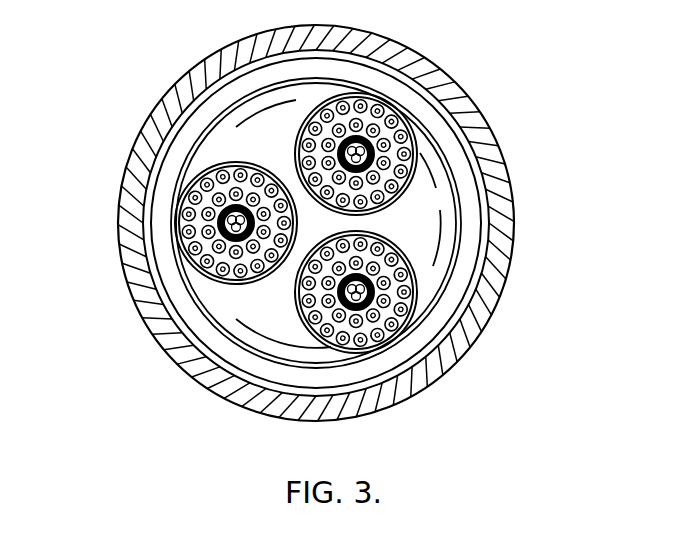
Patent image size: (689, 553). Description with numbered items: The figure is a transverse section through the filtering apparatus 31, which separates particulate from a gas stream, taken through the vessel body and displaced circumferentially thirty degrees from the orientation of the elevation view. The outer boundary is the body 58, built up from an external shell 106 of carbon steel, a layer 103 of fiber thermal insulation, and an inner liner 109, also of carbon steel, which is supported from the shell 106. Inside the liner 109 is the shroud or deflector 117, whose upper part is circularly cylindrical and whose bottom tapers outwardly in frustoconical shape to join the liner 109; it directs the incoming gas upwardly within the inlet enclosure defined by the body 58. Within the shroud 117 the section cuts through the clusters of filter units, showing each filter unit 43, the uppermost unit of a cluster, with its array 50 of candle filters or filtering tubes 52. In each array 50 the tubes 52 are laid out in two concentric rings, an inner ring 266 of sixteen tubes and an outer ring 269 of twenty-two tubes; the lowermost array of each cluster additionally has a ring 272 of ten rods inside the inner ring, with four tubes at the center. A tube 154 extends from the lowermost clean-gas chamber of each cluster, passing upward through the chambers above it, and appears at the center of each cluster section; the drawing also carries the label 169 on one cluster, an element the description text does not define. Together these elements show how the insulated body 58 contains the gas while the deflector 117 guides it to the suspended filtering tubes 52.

The filtering apparatus 31 is at (571, 264).
The filter unit 43 is at (257, 164).
The array 50 is at (402, 187).
The filtering tubes 52 is at (180, 237).
The body 58 is at (119, 193).
The layer of fiber thermal insulation 103 is at (472, 338).
The external shell 106 is at (150, 340).
The liner 109 is at (286, 46).
The shroud or deflector 117 is at (180, 265).
The tube 154 is at (205, 272).
The conductor jacket 169 is at (300, 133).
The inner ring 266 is at (438, 267).
The outer ring 269 is at (208, 158).
The ring of rods 272 is at (283, 318).